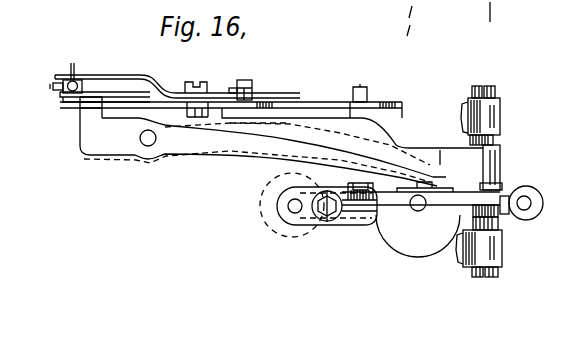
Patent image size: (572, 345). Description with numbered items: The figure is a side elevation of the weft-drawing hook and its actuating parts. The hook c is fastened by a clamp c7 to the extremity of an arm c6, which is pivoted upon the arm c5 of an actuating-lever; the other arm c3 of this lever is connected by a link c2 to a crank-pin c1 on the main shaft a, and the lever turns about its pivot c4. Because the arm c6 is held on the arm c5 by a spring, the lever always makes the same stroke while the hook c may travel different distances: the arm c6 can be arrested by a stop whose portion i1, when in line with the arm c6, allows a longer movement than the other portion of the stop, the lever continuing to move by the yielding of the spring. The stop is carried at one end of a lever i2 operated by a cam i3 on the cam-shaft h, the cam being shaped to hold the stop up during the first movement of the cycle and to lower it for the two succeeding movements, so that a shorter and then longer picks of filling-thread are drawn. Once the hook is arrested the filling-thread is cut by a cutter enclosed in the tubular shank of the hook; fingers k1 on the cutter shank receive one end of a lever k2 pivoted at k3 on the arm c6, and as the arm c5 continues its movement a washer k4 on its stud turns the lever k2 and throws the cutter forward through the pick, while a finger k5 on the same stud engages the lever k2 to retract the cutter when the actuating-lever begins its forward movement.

The fingers k1 is at (75, 67).
The lever k2 is at (130, 74).
The pivot k3 is at (191, 82).
The washer k4 is at (231, 88).
The finger k5 is at (250, 82).
The arm of the actuating-lever c5 is at (300, 112).
The arm c6 is at (327, 108).
The link c2 is at (450, 189).
The pivot of the lever c4 is at (500, 112).
The arm of a lever c3 is at (525, 200).
The clamp c7 is at (52, 87).
The hook c is at (62, 97).
The portion of the stop i1 is at (84, 104).
The lever i2 is at (160, 140).
The cam i3 is at (418, 236).
The cam-shaft h is at (428, 208).
The main shaft a is at (275, 203).
The crank-pin c1 is at (327, 223).